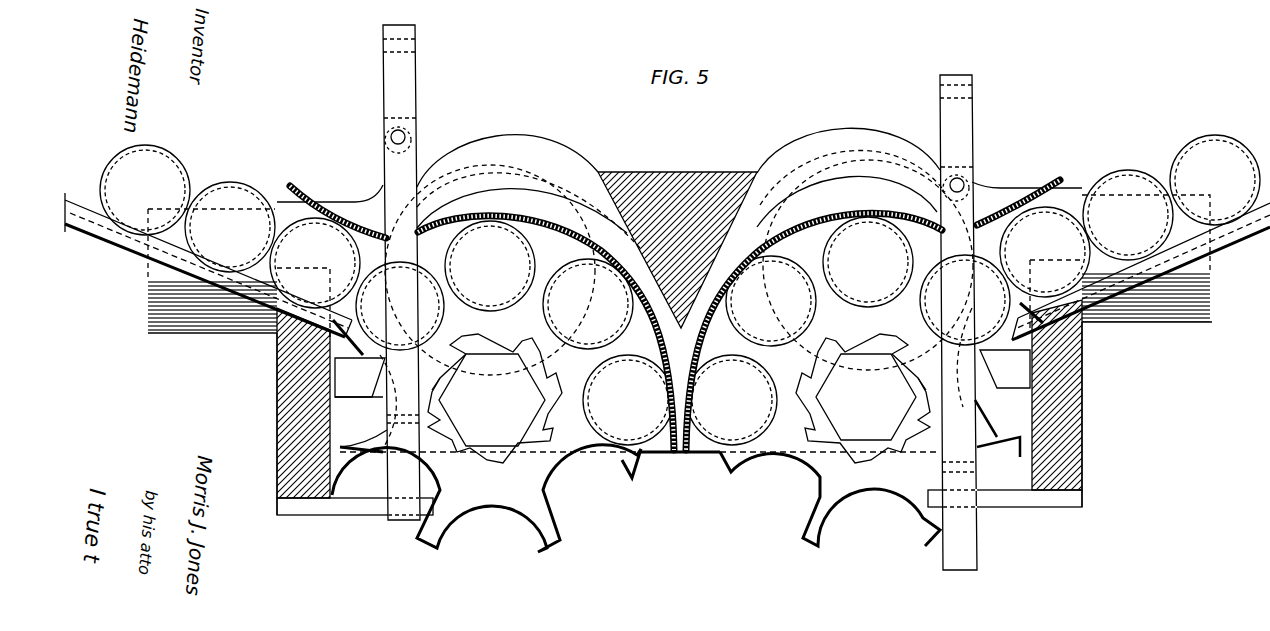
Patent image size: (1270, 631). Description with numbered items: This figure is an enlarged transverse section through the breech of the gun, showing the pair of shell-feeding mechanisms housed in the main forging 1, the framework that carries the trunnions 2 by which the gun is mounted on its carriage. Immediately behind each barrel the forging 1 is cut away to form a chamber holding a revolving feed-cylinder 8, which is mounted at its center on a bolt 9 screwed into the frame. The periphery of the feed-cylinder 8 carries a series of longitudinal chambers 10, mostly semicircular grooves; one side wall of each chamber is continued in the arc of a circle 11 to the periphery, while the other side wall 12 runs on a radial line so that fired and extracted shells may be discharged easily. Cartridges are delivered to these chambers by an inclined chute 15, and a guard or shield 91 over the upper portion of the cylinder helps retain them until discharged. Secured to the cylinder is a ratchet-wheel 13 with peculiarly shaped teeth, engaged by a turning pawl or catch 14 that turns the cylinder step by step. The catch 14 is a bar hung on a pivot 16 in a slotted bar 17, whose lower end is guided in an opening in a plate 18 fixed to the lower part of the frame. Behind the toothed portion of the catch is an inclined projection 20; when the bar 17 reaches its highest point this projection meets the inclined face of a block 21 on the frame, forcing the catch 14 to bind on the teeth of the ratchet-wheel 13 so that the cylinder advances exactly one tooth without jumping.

The main forging 1 is at (672, 172).
The trunnions 2 is at (680, 267).
The revolving feed-cylinder 8 is at (636, 485).
The bolt 9 is at (677, 400).
The longitudinal chambers 10 is at (613, 506).
The arc-shaped side wall 11 is at (621, 461).
The radial side wall 12 is at (551, 522).
The ratchet-wheel 13 is at (548, 424).
The turning pawl or catch 14 is at (440, 378).
The inclined chute 15 is at (667, 266).
The pivot 16 is at (408, 135).
The slotted bar 17 is at (418, 72).
The plate 18 is at (679, 501).
The inclined projection 20 is at (368, 398).
The block 21 is at (682, 373).
The guard or shield 91 is at (318, 206).